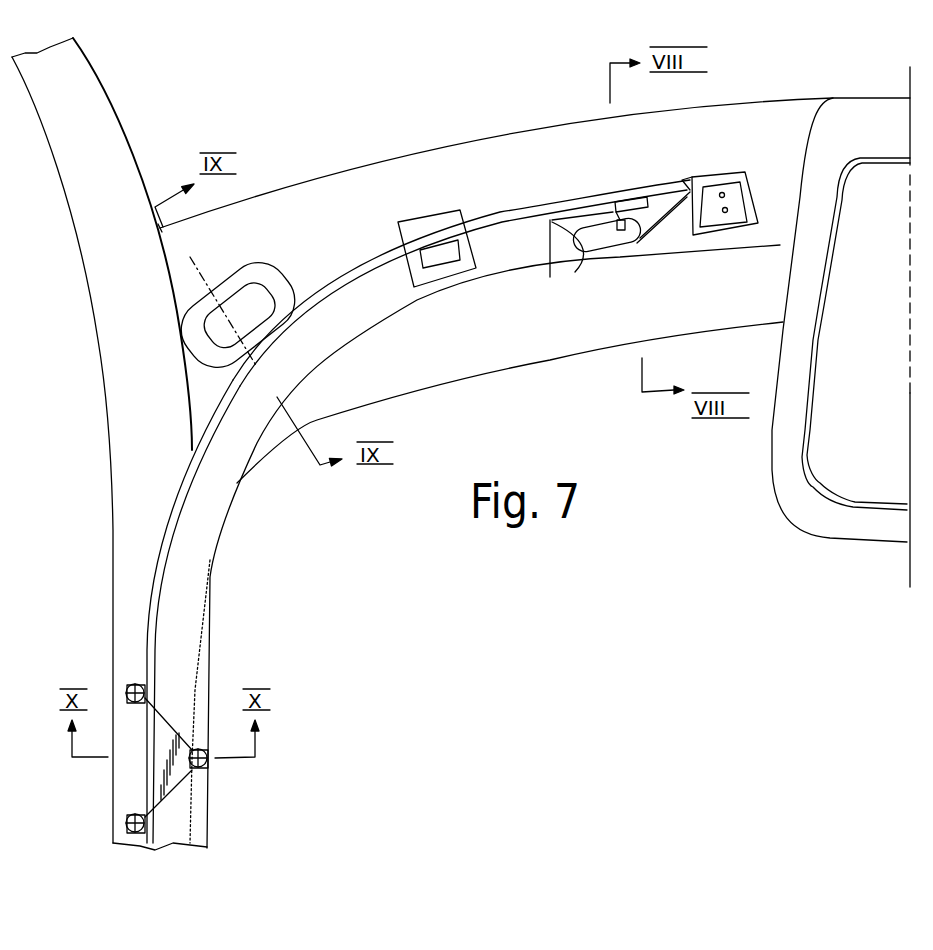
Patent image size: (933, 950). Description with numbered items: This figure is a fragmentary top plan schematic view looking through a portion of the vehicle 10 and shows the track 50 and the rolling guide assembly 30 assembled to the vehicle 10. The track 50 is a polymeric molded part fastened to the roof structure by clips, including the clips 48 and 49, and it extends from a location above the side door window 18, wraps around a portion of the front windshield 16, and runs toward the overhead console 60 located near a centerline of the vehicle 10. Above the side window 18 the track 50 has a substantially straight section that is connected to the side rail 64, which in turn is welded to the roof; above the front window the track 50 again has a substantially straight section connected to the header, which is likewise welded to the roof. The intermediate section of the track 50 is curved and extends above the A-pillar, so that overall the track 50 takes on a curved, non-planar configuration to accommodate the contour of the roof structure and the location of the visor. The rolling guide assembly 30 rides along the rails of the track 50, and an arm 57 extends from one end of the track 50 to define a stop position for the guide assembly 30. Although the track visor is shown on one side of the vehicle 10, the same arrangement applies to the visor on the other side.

The vehicle 10 is at (436, 576).
The front windshield 16 is at (387, 160).
The side door window 18 is at (106, 607).
The rolling guide assembly 30 is at (172, 730).
The clip 48 is at (438, 248).
The clip 49 is at (615, 203).
The track 50 is at (225, 515).
The arm 57 is at (688, 170).
The overhead console 60 is at (785, 418).
The side rail 64 is at (152, 547).